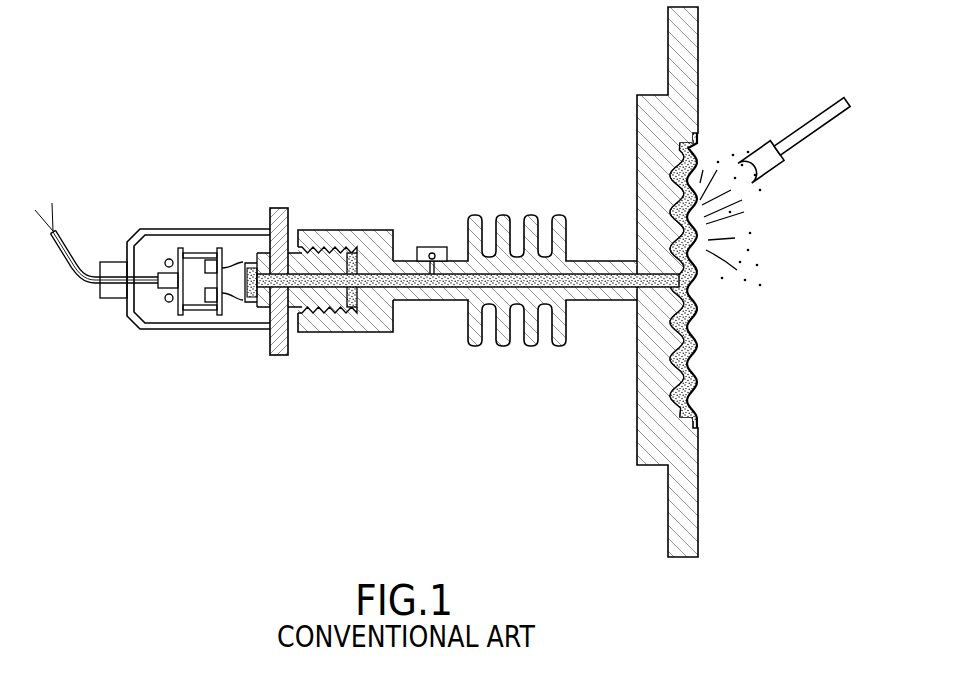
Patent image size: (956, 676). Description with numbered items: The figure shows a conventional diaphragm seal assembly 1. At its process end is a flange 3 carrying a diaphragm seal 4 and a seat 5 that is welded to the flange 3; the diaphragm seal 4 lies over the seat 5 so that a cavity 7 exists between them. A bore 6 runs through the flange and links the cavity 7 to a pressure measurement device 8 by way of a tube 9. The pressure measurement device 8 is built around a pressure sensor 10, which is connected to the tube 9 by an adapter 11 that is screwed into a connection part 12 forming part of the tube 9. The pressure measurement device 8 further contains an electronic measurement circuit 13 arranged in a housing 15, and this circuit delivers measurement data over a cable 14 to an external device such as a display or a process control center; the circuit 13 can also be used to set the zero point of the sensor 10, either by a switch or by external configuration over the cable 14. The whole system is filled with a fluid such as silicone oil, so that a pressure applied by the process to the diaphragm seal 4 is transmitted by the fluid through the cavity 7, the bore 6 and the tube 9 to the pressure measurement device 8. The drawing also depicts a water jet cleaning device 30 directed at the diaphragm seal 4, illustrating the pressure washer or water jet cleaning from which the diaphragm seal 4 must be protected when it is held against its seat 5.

The ignition plug assembly 1 is at (357, 271).
The flange 3 is at (662, 440).
The diaphragm seal 4 is at (698, 332).
The seat 5 is at (670, 338).
The bore 6 is at (598, 280).
The cavity 7 is at (688, 372).
The pressure measurement device 8 is at (152, 235).
The tube 9 is at (440, 302).
The pressure sensor 10 is at (245, 297).
The adapter 11 is at (277, 208).
The connection part 12 is at (368, 247).
The electronic measurement circuit 13 is at (207, 295).
The cable 14 is at (63, 243).
The housing 15 is at (178, 248).
The water jet cleaning device 30 is at (805, 137).